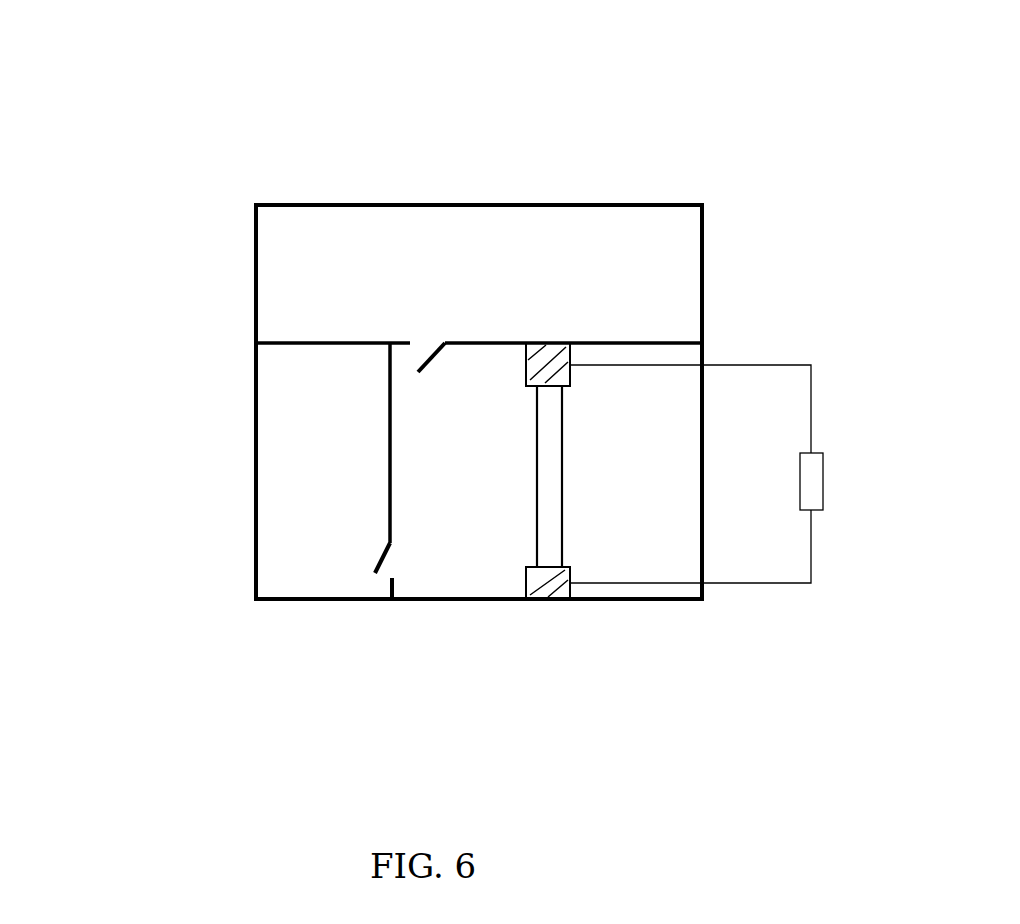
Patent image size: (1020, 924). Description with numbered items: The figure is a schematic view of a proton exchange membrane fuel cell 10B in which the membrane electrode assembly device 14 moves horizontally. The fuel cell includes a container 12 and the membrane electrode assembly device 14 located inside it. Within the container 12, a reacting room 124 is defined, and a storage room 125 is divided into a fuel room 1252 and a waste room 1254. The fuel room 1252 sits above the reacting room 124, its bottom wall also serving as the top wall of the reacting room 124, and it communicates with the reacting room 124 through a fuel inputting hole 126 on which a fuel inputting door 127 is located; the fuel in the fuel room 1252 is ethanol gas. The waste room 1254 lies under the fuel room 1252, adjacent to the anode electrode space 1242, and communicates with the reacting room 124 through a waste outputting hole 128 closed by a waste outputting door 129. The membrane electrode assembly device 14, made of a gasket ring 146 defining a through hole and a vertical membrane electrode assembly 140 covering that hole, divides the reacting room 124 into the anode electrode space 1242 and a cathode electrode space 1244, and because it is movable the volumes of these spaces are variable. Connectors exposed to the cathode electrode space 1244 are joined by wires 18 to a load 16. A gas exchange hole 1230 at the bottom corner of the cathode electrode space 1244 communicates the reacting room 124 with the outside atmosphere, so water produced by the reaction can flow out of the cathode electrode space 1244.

The proton exchange membrane fuel cell 10B is at (460, 60).
The container 12 is at (240, 280).
The storage room 125 is at (137, 420).
The fuel room 1252 is at (300, 302).
The waste room 1254 is at (305, 437).
The fuel inputting hole 126 is at (420, 346).
The fuel inputting door 127 is at (432, 347).
The waste outputting hole 128 is at (392, 567).
The waste outputting door 129 is at (380, 560).
The anode electrode space 1242 is at (462, 508).
The cathode electrode space 1244 is at (647, 498).
The reacting room 124 is at (645, 688).
The gas exchange hole 1230 is at (705, 590).
The gasket ring 146 is at (555, 343).
The membrane electrode assembly 140 is at (547, 445).
The membrane electrode assembly device 14 is at (812, 232).
The wires 18 is at (760, 363).
The load 16 is at (813, 472).